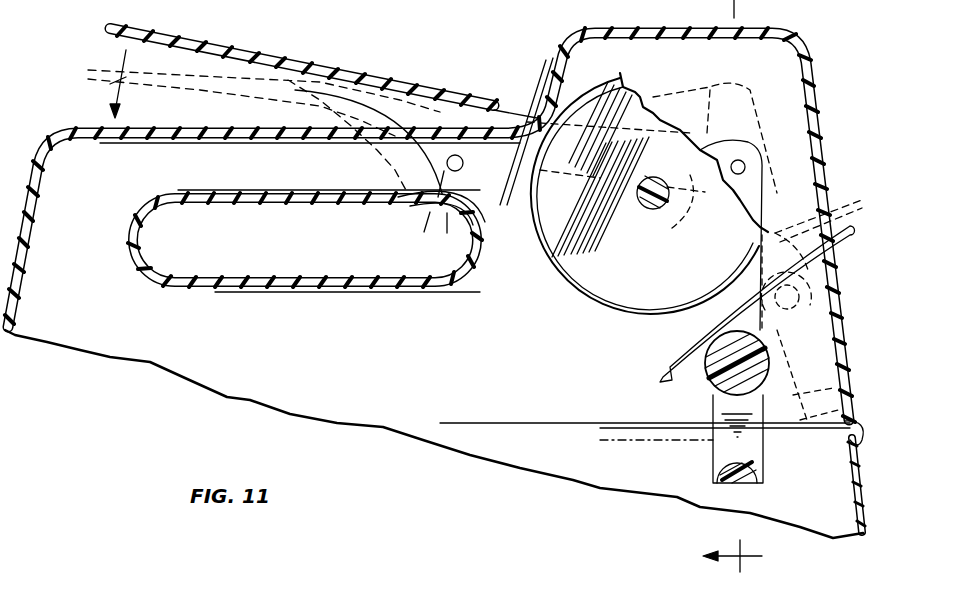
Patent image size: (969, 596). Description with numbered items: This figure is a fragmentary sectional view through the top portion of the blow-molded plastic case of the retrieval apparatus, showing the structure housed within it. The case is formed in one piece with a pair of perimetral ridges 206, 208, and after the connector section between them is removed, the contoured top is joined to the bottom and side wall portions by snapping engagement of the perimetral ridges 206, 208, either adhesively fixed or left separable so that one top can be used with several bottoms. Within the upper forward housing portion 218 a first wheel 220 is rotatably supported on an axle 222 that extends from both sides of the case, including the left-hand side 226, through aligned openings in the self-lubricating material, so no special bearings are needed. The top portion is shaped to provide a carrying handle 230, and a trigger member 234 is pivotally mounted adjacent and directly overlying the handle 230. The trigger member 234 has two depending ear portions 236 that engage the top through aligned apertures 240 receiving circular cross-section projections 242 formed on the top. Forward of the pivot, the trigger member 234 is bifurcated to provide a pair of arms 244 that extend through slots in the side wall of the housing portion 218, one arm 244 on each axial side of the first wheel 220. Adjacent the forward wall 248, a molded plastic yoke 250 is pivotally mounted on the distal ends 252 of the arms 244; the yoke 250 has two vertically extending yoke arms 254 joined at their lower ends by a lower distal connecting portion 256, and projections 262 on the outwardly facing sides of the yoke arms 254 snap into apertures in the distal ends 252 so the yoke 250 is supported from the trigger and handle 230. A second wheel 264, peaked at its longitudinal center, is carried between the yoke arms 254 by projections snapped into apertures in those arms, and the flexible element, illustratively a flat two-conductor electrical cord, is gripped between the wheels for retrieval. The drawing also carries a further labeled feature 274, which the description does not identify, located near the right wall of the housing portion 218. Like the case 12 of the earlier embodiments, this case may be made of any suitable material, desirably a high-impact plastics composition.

The perimetral ridge 206 is at (843, 432).
The perimetral ridge 208 is at (858, 418).
The housing portion 218 is at (803, 54).
The first wheel 220 is at (575, 272).
The axle 222 is at (647, 210).
The left-hand side 226 is at (573, 68).
The carrying handle 230 is at (108, 181).
The trigger member 234 is at (415, 84).
The depending ear portion 236 is at (448, 227).
The aligned aperture 240 is at (449, 164).
The circular cross-section projection 242 is at (433, 220).
The arm 244 is at (687, 217).
The forward wall 248 is at (628, 292).
The yoke 250 is at (700, 477).
The distal end 252 is at (733, 140).
The yoke arm 254 is at (720, 450).
The lower distal connecting portion 256 is at (736, 483).
The projection 262 is at (745, 158).
The second wheel 264 is at (713, 380).
The slot 274 is at (827, 197).
The case 12 is at (748, 556).